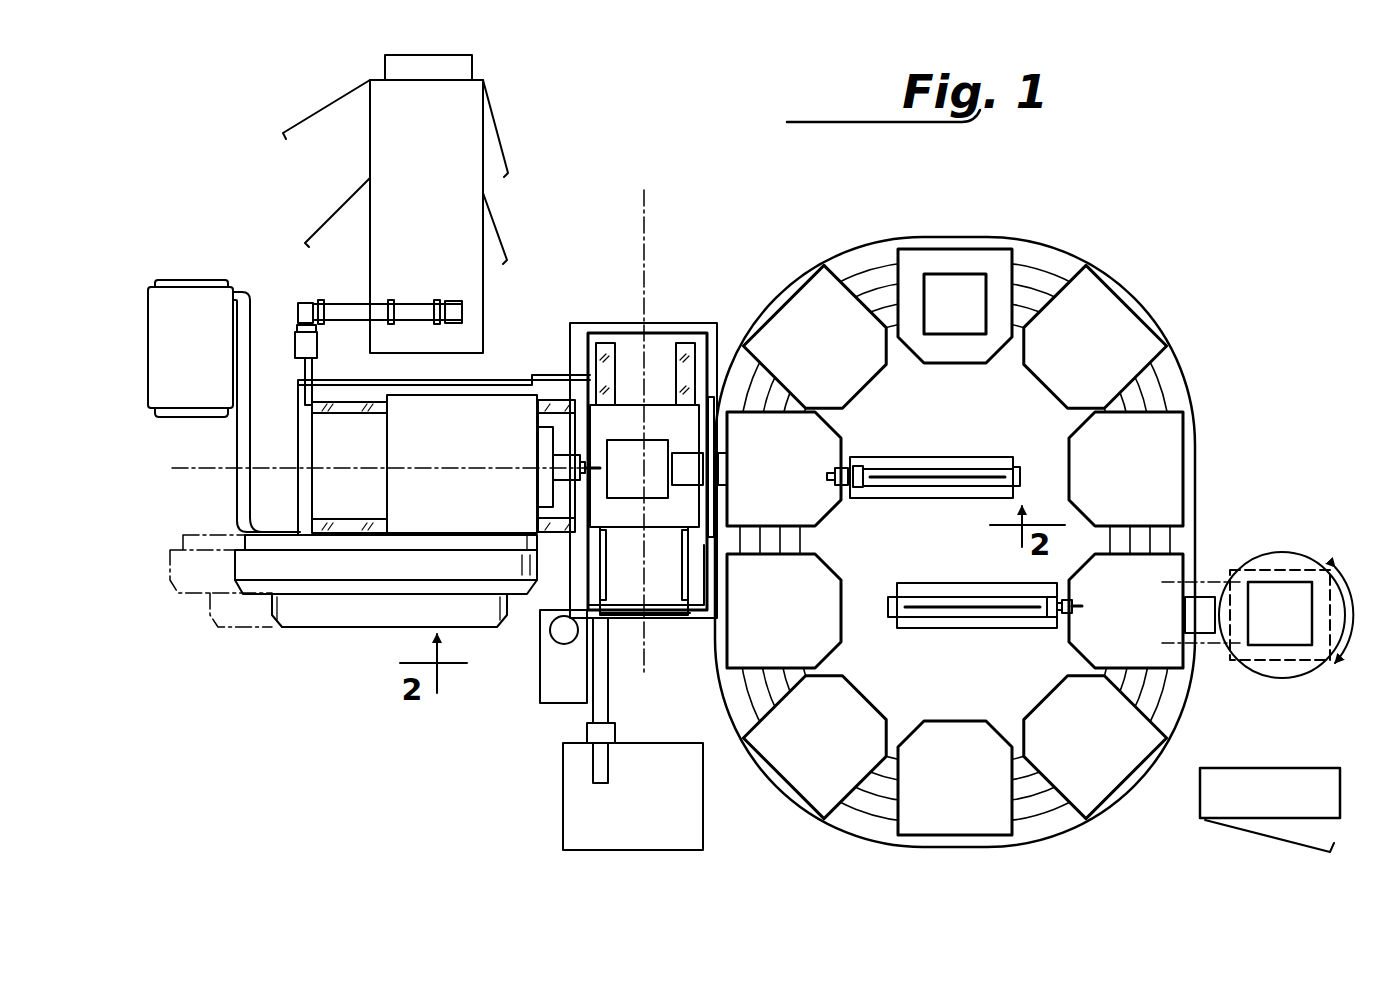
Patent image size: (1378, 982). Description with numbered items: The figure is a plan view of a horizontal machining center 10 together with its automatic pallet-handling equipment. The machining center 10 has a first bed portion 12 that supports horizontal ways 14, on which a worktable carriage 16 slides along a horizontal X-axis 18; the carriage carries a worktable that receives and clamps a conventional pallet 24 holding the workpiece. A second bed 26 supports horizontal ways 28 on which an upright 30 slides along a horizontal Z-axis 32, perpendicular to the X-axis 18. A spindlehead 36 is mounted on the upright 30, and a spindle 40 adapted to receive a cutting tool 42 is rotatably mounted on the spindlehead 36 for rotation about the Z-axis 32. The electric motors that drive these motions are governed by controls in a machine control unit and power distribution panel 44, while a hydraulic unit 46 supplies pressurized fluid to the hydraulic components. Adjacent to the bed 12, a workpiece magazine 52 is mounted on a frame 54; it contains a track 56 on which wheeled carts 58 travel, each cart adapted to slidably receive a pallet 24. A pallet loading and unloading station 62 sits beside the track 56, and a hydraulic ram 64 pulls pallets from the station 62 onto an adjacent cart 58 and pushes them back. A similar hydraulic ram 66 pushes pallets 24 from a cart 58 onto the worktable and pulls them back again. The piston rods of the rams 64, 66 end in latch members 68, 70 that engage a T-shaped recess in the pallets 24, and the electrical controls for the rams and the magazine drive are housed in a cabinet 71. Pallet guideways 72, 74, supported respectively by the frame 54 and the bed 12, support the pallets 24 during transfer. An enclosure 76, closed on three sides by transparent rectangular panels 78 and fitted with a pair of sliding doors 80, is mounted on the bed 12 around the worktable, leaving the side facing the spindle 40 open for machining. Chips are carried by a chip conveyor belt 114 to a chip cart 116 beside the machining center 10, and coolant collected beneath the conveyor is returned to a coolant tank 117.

The horizontal machining center 10 is at (370, 630).
The first bed portion 12 is at (578, 323).
The horizontal ways 14 is at (612, 378).
The worktable carriage 16 is at (666, 518).
The horizontal X-axis 18 is at (647, 637).
The pallet 24 is at (626, 498).
The second bed 26 is at (330, 432).
The horizontal ways 28 is at (383, 415).
The upright 30 is at (496, 405).
The horizontal Z-axis 32 is at (188, 475).
The spindlehead 36 is at (546, 438).
The spindle 40 is at (577, 472).
The cutting tool 42 is at (602, 468).
The machine control unit and power distribution panel 44 is at (380, 151).
The hydraulic unit 46 is at (160, 353).
The workpiece magazine 52 is at (956, 499).
The frame 54 is at (1063, 248).
The track 56 is at (866, 270).
The wheeled carts 58 is at (935, 252).
The pallet loading and unloading station 62 is at (1290, 560).
The hydraulic ram 64 is at (950, 615).
The hydraulic ram 66 is at (948, 485).
The latch member 68 is at (1065, 614).
The latch member 70 is at (843, 487).
The cabinet 71 is at (1283, 770).
The pallet guideway 72 is at (723, 482).
The pallet guideway 74 is at (678, 482).
The enclosure 76 is at (660, 320).
The transparent rectangular panels 78 is at (605, 335).
The sliding doors 80 is at (712, 410).
The chip conveyor belt 114 is at (597, 708).
The chip cart 116 is at (570, 798).
The coolant tank 117 is at (540, 678).